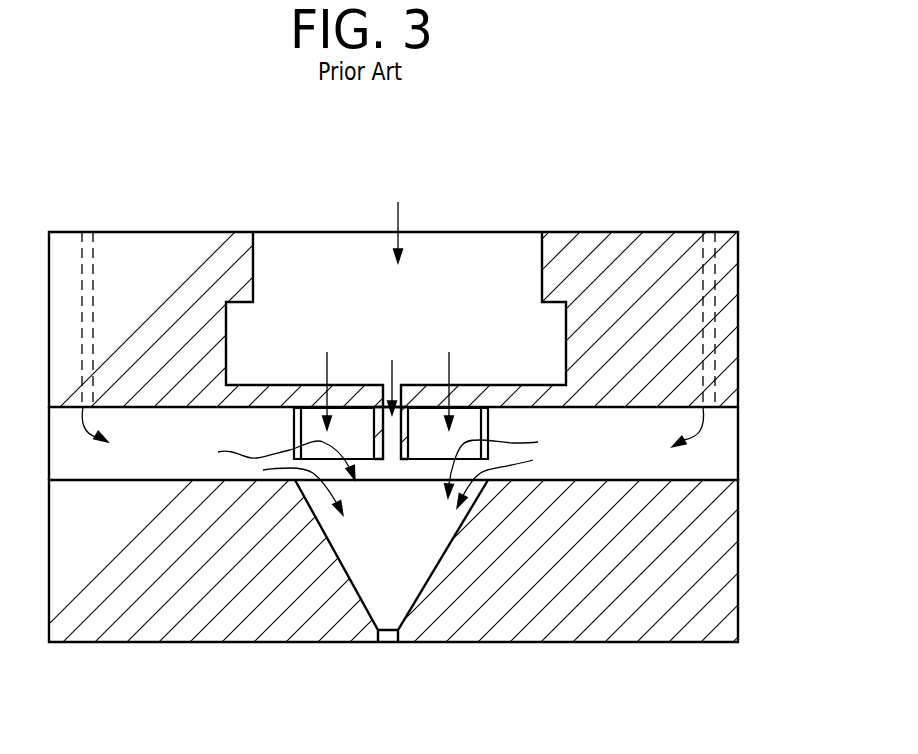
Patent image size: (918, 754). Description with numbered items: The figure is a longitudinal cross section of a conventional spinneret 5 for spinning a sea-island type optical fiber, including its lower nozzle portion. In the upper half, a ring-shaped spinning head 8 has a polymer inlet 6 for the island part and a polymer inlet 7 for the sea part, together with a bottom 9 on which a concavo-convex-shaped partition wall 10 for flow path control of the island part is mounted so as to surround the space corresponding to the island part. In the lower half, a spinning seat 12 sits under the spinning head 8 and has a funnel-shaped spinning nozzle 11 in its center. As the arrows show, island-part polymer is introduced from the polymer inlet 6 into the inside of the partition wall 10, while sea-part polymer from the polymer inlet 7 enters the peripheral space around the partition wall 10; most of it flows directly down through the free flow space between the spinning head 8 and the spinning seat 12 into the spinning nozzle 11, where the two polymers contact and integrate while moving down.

The spinneret 5 is at (323, 227).
The polymer inlet 6 is at (542, 268).
The polymer inlet 7 is at (78, 262).
The spinning head 8 is at (173, 247).
The bottom 9 is at (568, 397).
The partition wall 10 is at (422, 461).
The spinning nozzle 11 is at (425, 578).
The spinning seat 12 is at (732, 588).